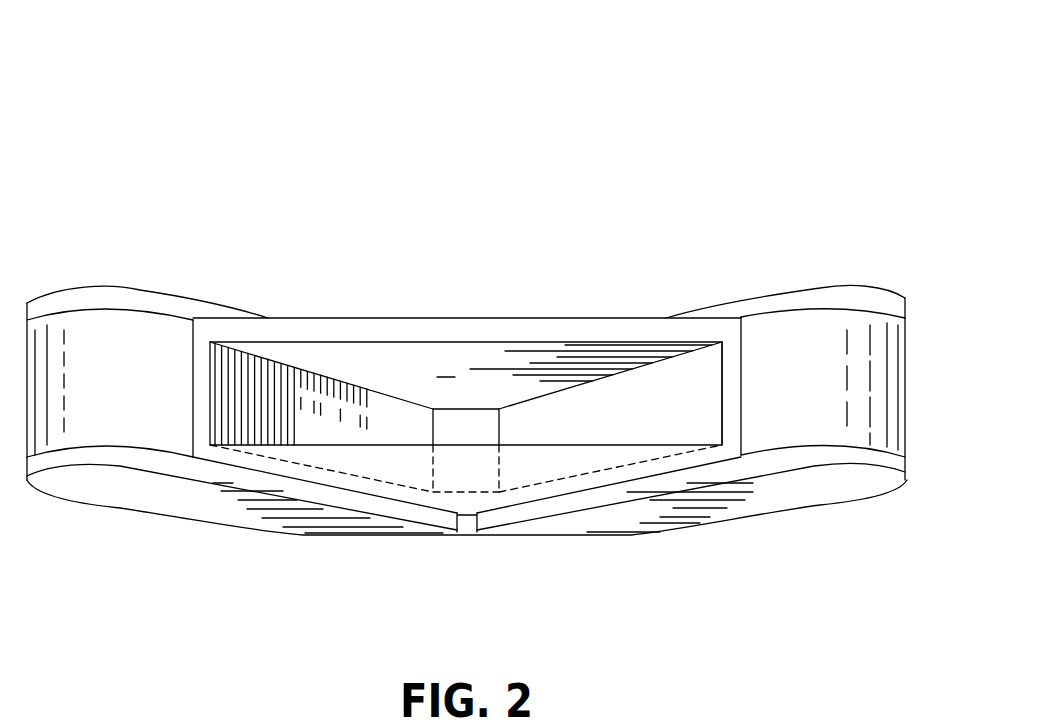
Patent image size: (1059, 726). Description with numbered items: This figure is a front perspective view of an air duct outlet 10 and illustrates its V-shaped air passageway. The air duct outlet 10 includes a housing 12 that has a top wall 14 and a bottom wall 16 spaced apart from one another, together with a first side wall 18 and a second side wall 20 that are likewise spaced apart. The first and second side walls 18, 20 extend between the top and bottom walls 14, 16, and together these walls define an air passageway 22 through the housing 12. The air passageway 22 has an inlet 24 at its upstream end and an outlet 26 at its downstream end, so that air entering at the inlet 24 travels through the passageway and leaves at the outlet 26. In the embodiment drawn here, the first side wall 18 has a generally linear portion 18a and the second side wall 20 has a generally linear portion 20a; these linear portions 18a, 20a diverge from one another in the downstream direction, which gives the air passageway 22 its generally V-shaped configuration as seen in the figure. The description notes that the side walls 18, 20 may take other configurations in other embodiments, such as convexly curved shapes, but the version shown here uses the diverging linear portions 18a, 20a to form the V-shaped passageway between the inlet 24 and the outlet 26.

The air duct outlet 10 is at (620, 138).
The housing 12 is at (513, 317).
The top wall 14 is at (405, 318).
The bottom wall 16 is at (400, 473).
The first side wall 18 is at (253, 403).
The generally linear portion of first side wall 18a is at (293, 423).
The second side wall 20 is at (690, 382).
The generally linear portion of second side wall 20a is at (628, 418).
The air passageway 22 is at (453, 430).
The inlet 24 is at (497, 422).
The outlet 26 is at (716, 422).